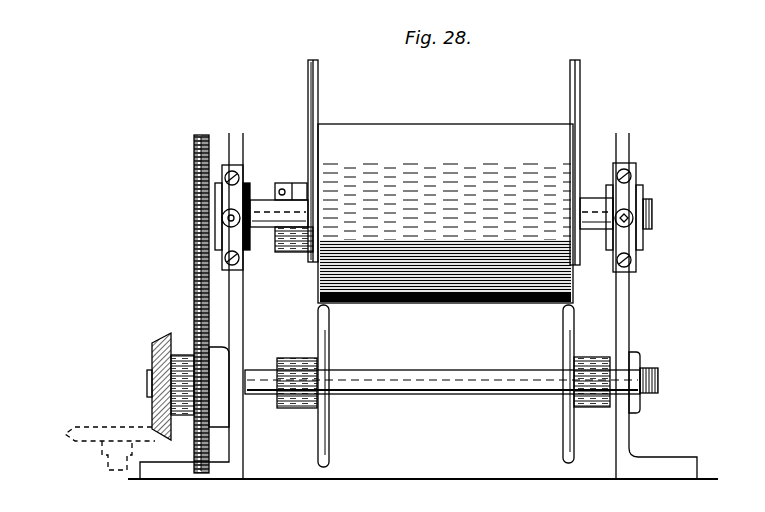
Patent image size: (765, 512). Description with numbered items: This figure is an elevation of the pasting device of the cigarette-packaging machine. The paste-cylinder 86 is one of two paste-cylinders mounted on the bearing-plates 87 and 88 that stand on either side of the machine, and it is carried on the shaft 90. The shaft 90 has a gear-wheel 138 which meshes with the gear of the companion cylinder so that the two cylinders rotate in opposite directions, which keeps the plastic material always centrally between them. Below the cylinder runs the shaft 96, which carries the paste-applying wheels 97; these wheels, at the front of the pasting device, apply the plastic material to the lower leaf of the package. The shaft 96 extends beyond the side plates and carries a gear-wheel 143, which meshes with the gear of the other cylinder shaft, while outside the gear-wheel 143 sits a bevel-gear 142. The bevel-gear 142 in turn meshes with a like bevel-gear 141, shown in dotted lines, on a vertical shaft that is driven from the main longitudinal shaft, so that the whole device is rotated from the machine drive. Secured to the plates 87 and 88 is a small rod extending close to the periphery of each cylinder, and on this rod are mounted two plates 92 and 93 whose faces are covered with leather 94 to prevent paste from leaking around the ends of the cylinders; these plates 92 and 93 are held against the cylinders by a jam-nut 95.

The paste-cylinder 86 is at (445, 213).
The bearing-plate 87 is at (237, 326).
The bearing-plate 88 is at (624, 322).
The shaft 90 is at (652, 212).
The plate 92 is at (307, 92).
The plate 93 is at (560, 88).
The leather 94 is at (314, 77).
The jam-nut 95 is at (283, 184).
The shaft 96 is at (457, 394).
The paste-applying wheel 97 is at (330, 330).
The gear-wheel 138 is at (194, 173).
The bevel-gear 141 is at (104, 428).
The bevel-gear 142 is at (152, 344).
The gear-wheel 143 is at (196, 322).